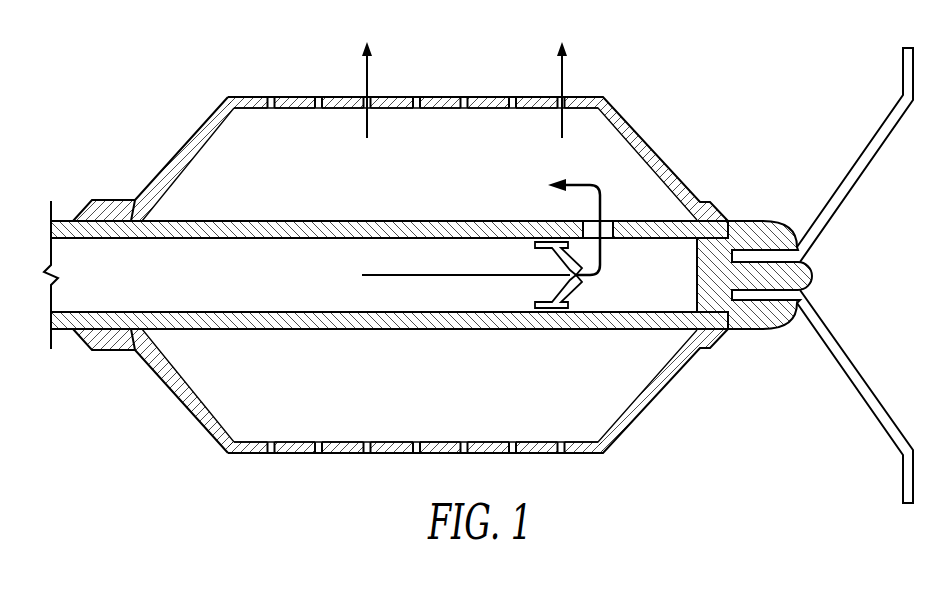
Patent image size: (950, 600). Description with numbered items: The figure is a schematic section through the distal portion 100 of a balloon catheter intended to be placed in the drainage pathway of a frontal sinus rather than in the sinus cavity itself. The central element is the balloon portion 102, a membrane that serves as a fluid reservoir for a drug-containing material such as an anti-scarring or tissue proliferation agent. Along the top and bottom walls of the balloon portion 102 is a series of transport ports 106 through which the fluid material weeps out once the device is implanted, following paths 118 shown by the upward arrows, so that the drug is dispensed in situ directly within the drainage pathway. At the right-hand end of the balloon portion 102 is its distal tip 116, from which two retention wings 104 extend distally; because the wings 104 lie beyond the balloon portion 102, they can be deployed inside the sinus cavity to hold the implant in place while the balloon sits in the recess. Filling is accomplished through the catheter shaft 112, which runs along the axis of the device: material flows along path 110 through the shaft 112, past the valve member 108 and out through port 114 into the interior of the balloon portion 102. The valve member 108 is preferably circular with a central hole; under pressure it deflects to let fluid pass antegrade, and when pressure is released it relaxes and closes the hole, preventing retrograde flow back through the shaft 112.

The distal portion 100 is at (135, 42).
The balloon portion 102 is at (650, 143).
The wings 104 is at (858, 366).
The ports 106 is at (511, 97).
The valve member 108 is at (558, 242).
The path 110 is at (591, 182).
The catheter shaft 112 is at (406, 330).
The port 114 is at (607, 242).
The distal tip 116 is at (752, 221).
The paths 118 is at (366, 80).